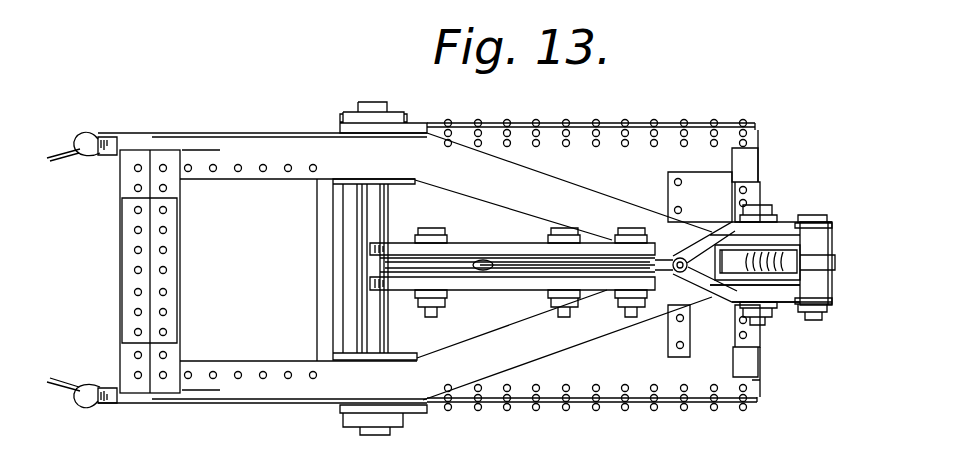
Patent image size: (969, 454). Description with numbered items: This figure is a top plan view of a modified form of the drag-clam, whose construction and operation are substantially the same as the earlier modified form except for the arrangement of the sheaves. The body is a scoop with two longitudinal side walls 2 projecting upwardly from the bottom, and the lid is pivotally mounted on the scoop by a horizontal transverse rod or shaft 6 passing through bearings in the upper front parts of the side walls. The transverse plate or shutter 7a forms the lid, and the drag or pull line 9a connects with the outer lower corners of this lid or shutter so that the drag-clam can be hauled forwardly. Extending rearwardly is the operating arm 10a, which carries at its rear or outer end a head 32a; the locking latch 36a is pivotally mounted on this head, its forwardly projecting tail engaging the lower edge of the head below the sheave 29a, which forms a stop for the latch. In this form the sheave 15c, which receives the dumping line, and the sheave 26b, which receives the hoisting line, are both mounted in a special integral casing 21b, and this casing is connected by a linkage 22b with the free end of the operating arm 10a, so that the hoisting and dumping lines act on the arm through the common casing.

The longitudinal side walls 2 is at (553, 128).
The transverse rod or shaft 6 is at (332, 328).
The transverse plate or shutter 7a is at (218, 271).
The drag or pull line 9a is at (81, 283).
The operating arm 10a is at (563, 266).
The sheave 15c is at (420, 267).
The integral casing 21b is at (515, 243).
The linkage 22b is at (677, 273).
The sheave 26b is at (587, 260).
The sheave 29a is at (750, 262).
The head 32a is at (787, 278).
The locking latch 36a is at (822, 235).